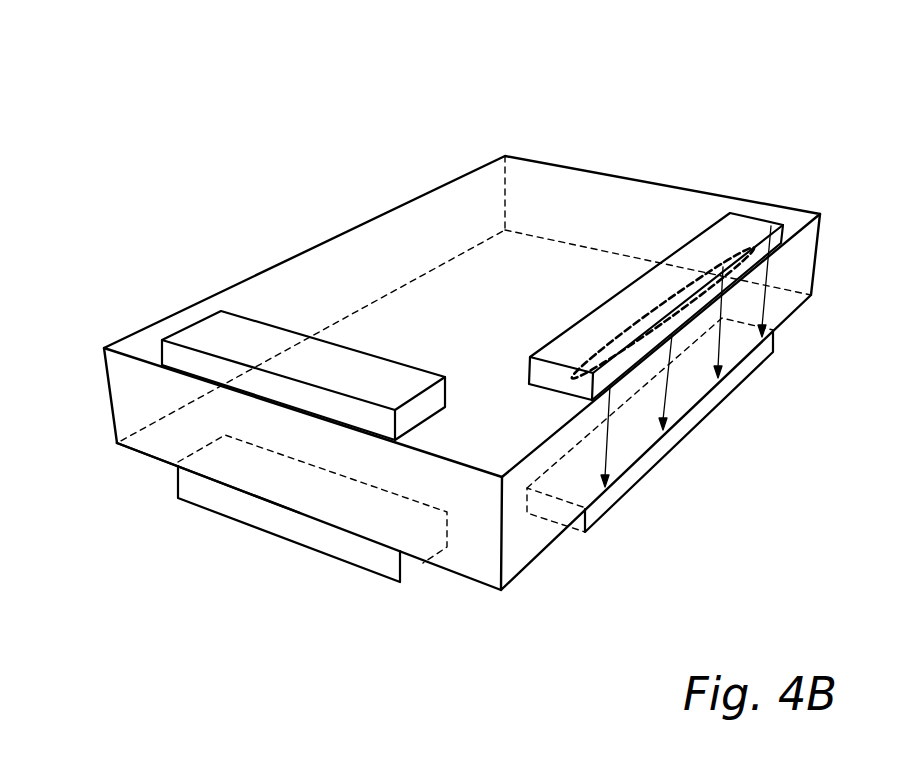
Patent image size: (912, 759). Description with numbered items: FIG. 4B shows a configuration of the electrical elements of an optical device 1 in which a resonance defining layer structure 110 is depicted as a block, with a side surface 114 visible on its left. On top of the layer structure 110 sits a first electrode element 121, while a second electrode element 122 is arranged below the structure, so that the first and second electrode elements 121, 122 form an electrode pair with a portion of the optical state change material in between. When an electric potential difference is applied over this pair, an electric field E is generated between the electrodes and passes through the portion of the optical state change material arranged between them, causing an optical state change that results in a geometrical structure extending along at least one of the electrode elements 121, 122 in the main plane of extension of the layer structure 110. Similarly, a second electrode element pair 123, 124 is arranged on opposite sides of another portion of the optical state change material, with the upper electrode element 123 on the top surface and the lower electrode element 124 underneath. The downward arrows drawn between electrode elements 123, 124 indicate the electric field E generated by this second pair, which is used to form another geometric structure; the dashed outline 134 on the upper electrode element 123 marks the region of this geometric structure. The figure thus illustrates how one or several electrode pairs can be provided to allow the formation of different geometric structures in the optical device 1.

The assembly 1 is at (813, 117).
The resonance defining layer structure 110 is at (547, 163).
The side surface of body 114 is at (110, 392).
The first electrode element 121 is at (242, 320).
The second electrode element 122 is at (295, 525).
The second electrode element pair (upper electrode) 123 is at (769, 222).
The second electrode element pair (lower electrode) 124 is at (600, 502).
The contact region 134 is at (705, 265).
The electric field E is at (670, 373).